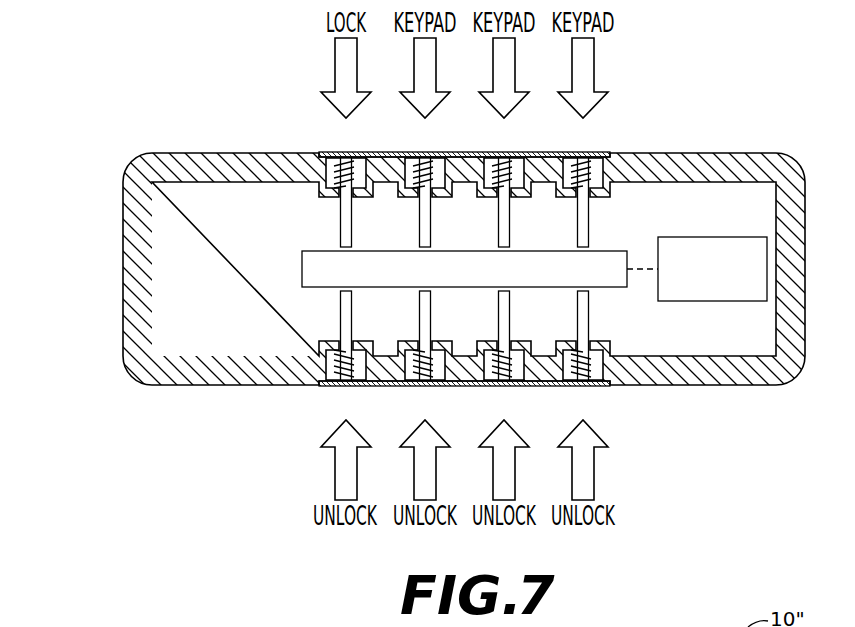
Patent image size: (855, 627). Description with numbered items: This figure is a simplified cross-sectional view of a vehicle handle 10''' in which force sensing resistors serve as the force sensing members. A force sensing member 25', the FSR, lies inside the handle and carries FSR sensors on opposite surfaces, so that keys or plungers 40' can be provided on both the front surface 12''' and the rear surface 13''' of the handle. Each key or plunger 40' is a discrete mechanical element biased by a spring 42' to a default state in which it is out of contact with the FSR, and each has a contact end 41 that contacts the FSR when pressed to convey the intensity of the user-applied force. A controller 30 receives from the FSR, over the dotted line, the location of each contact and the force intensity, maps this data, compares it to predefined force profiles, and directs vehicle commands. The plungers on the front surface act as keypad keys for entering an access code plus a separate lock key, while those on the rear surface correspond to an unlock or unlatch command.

The vehicle handle 10''' is at (451, 249).
The front surface 12''' is at (464, 183).
The rear surface 13''' is at (464, 359).
The keys or plungers 40' is at (461, 276).
The contact end 41 is at (346, 252).
The spring 42' is at (438, 269).
The force sensing member 25' is at (484, 245).
The controller 30 is at (710, 237).